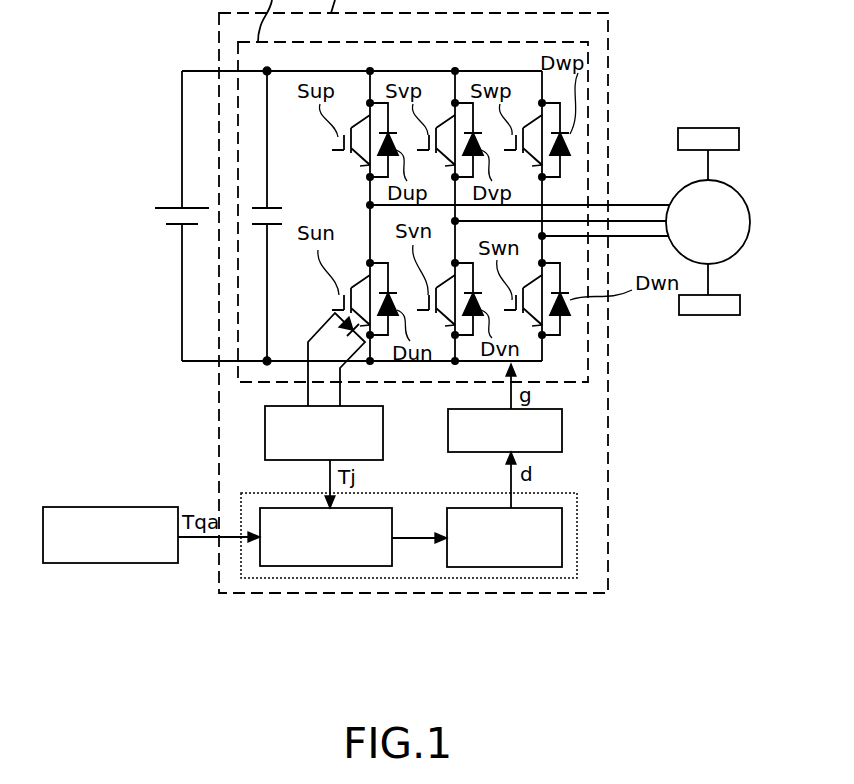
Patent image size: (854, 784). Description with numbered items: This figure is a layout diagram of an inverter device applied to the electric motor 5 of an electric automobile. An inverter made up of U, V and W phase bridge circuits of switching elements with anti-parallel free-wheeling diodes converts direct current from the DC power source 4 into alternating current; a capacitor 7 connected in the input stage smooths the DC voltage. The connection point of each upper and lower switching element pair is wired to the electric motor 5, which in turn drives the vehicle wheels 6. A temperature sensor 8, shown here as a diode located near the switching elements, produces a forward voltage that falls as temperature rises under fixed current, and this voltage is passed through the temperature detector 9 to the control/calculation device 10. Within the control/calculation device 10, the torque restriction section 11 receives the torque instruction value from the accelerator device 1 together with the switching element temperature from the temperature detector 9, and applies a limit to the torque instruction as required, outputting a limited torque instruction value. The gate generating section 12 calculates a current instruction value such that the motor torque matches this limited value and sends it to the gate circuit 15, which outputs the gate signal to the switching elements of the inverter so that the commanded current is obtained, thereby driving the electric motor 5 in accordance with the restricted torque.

The accelerator device 1 is at (103, 507).
The DC power source 4 is at (158, 222).
The electric motor 5 is at (737, 188).
The vehicle wheels 6 is at (715, 316).
The capacitor 7 is at (284, 217).
The temperature sensor 8 is at (336, 337).
The temperature detector 9 is at (265, 440).
The control/calculation device 10 is at (577, 545).
The torque restriction section 11 is at (332, 566).
The gate generating section 12 is at (518, 567).
The gate circuit 15 is at (562, 432).